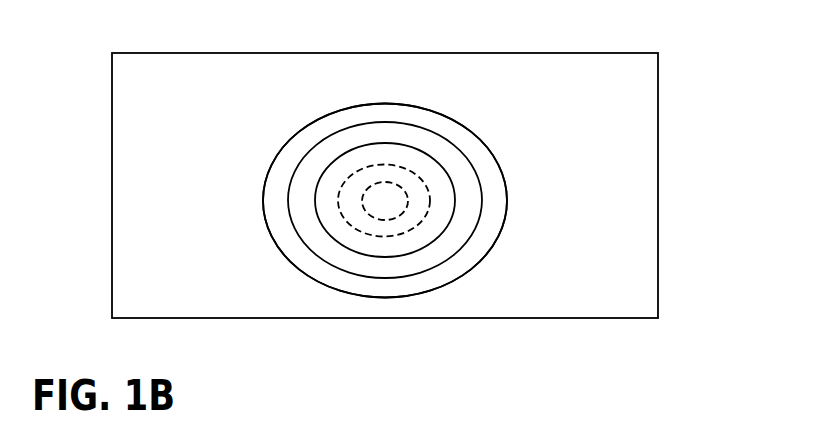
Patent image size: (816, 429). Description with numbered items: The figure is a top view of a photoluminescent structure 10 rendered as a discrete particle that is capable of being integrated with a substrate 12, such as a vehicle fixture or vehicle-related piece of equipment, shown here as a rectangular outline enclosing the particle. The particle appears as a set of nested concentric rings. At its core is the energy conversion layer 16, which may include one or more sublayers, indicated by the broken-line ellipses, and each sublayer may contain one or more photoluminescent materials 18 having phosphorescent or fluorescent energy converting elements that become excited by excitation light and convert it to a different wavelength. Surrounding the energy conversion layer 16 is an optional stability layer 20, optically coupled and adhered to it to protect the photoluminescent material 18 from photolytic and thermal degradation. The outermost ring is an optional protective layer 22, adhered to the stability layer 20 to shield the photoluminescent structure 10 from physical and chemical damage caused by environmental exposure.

The photoluminescent structure 10 is at (302, 112).
The substrate 12 is at (658, 143).
The energy conversion layer 16 is at (433, 243).
The photoluminescent material 18 is at (374, 213).
The stability layer 20 is at (443, 140).
The protective layer 22 is at (417, 103).